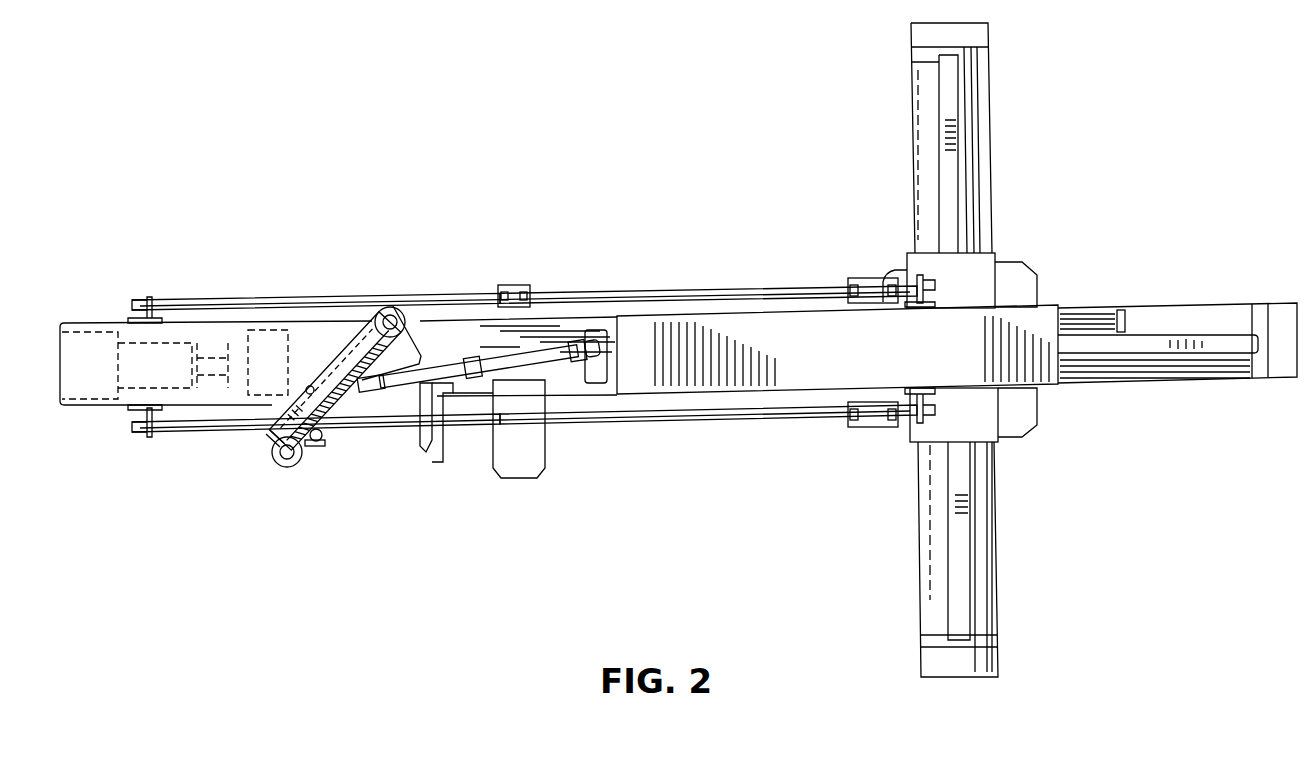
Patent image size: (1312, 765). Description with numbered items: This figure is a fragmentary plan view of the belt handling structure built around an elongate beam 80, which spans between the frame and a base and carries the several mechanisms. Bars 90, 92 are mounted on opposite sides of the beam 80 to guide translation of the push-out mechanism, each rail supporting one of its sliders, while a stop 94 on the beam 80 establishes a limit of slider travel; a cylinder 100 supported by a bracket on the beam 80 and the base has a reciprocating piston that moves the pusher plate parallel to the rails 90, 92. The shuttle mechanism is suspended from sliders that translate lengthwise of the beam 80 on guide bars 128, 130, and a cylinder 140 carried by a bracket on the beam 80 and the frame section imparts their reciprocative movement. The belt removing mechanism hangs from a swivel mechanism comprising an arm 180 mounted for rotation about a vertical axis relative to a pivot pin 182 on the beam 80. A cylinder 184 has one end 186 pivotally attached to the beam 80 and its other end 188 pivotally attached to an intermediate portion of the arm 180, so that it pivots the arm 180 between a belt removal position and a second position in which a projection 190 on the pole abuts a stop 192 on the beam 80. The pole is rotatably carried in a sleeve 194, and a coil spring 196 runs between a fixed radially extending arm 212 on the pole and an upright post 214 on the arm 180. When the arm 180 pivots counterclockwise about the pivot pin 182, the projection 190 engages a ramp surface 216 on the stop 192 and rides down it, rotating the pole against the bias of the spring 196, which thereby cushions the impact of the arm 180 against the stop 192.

The beam 80 is at (812, 355).
The bar 90 is at (650, 420).
The bar 92 is at (700, 292).
The stop 94 is at (900, 290).
The cylinder 100 is at (1092, 320).
The guide bar 128 is at (367, 422).
The guide bar 130 is at (283, 300).
The cylinder 140 is at (212, 347).
The arm 180 is at (330, 376).
The pivot pin 182 is at (392, 318).
The cylinder 184 is at (547, 352).
The end 186 is at (601, 343).
The other end 188 is at (420, 378).
The projection 190 is at (315, 442).
The stop 192 is at (432, 448).
The sleeve 194 is at (283, 467).
The coil spring 196 is at (268, 415).
The radially extending arm 212 is at (268, 447).
The upright post 214 is at (310, 386).
The ramp surface 216 is at (388, 420).